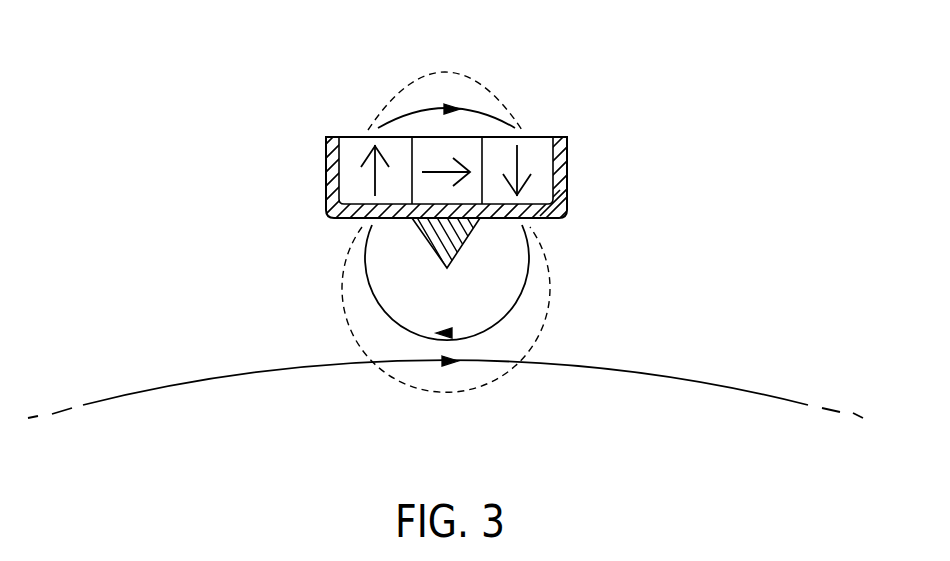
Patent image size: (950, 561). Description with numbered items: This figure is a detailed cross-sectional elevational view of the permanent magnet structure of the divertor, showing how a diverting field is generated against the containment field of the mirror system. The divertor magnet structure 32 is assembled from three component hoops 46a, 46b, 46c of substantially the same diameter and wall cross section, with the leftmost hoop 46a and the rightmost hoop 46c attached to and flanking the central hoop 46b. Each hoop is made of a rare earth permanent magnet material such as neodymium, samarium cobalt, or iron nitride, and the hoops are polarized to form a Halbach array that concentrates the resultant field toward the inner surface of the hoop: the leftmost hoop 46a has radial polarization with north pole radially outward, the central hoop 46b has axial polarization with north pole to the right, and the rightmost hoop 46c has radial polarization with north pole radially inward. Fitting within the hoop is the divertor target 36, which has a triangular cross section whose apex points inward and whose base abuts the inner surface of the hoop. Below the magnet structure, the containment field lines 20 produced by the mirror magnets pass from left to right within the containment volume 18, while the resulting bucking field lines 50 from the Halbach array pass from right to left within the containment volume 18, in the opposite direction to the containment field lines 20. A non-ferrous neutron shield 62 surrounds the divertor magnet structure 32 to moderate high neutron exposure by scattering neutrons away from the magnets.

The containment volume 18 is at (665, 333).
The containment field lines 20 is at (260, 370).
The divertor magnet structure 32 is at (549, 132).
The divertor target 36 is at (437, 232).
The leftmost hoop 46a is at (367, 137).
The central hoop 46b is at (443, 137).
The rightmost hoop 46c is at (530, 137).
The bucking field lines 50 is at (522, 290).
The non-ferrous neutron shield 62 is at (563, 170).